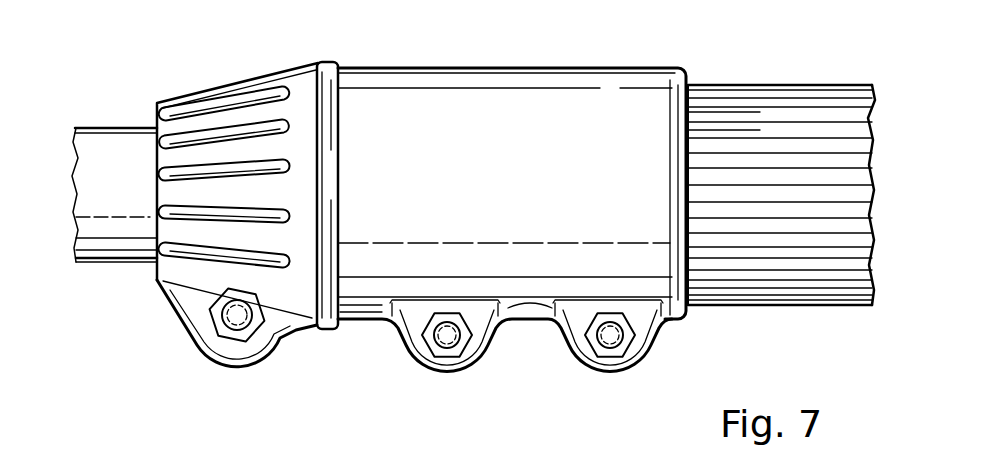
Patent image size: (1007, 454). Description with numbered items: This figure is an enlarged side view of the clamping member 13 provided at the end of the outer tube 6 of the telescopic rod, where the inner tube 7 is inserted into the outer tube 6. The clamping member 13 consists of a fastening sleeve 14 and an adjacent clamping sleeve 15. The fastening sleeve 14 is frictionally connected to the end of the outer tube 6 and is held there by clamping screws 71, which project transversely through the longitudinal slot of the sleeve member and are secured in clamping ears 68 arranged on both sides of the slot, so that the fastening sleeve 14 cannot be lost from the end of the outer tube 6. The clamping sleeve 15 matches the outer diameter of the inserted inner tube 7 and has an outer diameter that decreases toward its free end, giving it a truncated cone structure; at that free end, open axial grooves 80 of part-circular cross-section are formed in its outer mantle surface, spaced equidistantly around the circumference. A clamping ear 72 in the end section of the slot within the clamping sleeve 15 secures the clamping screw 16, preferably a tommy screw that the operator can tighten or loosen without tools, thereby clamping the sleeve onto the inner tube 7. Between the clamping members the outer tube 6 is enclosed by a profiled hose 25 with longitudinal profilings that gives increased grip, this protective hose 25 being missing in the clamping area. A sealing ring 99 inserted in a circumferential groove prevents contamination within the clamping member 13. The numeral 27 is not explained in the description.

The outer tube 6 is at (803, 93).
The inner tube 7 is at (98, 150).
The clamping member 13 is at (447, 63).
The fastening sleeve 14 is at (622, 82).
The clamping sleeve 15 is at (248, 87).
The clamping screw 16 is at (240, 323).
The profiled hose 25 is at (735, 117).
The rod bottom edge 27 is at (102, 267).
The clamping ear 68 is at (422, 357).
The clamping screws 71 is at (447, 340).
The clamping ear 72 is at (205, 337).
The axial grooves 80 is at (203, 133).
The sealing ring 99 is at (326, 62).